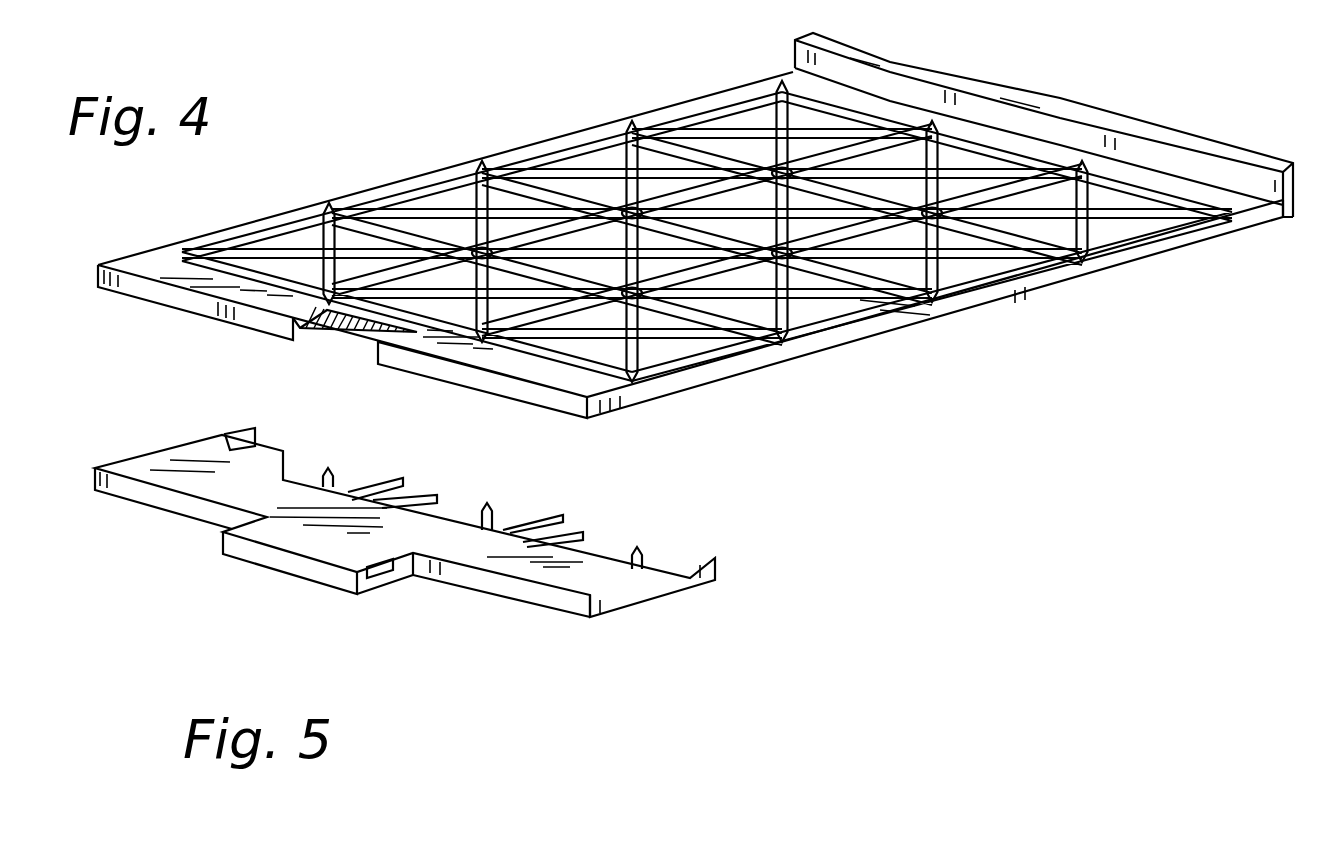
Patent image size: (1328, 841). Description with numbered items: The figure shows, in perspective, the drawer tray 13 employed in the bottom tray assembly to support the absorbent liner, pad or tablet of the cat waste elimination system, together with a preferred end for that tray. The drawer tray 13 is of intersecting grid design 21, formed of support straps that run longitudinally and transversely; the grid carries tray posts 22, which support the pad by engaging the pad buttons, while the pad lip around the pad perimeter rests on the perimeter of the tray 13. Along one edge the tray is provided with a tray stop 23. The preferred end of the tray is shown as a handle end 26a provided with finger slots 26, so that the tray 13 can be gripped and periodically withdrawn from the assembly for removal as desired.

In FIG. 4, the drawer tray 13 is at (303, 190).
In FIG. 5, the drawer tray 13 is at (147, 438).
In FIG. 4, the intersecting grid design 21 is at (700, 132).
In FIG. 5, the intersecting grid design 21 is at (275, 462).
In FIG. 4, the tray posts 22 is at (482, 246).
In FIG. 4, the tray stop 23 is at (1093, 135).
In FIG. 5, the finger slots 26 is at (375, 582).
In FIG. 5, the handle end 26a is at (290, 565).